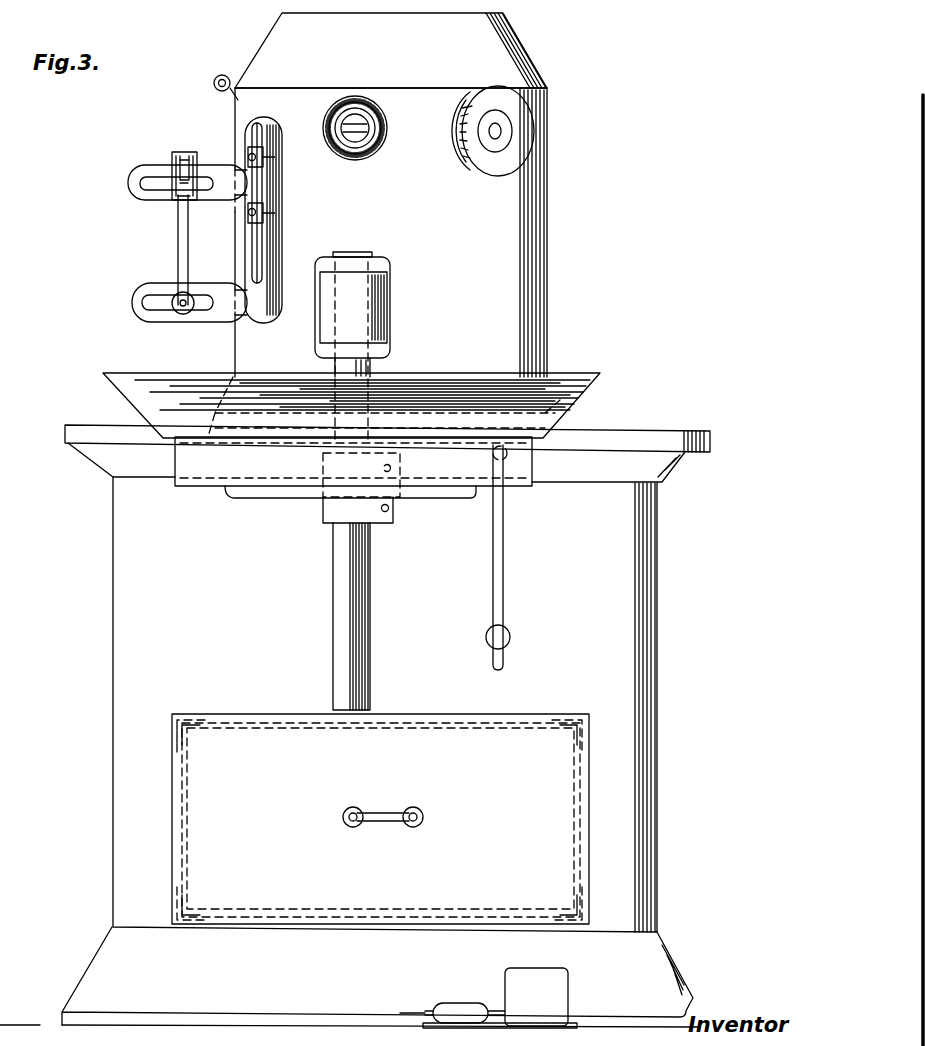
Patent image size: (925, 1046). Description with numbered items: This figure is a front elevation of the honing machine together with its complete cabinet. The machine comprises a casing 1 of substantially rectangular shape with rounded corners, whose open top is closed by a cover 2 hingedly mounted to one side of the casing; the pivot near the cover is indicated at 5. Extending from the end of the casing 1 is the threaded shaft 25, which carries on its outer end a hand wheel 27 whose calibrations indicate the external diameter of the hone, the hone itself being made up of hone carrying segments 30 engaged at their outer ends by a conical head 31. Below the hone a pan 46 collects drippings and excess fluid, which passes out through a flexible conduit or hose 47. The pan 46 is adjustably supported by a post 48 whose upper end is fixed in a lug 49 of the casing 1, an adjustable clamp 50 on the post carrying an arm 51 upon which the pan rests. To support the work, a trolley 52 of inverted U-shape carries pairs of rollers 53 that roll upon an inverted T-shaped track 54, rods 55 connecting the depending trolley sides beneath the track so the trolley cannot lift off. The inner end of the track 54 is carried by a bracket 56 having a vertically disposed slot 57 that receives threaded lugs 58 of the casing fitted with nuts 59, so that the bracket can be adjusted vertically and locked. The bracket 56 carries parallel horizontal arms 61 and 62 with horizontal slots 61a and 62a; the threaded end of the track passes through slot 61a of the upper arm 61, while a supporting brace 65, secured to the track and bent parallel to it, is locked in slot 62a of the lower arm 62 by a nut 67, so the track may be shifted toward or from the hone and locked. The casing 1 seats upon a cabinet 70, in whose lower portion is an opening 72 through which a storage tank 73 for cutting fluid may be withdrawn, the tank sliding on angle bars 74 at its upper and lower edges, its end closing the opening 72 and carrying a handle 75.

The casing 1 is at (527, 251).
The cover 2 is at (391, 50).
The pivot 5 is at (226, 103).
The threaded shaft 25 is at (500, 131).
The hand wheel 27 is at (477, 174).
The hone carrying segments 30 is at (380, 108).
The conical head 31 is at (374, 147).
The pan 46 is at (440, 386).
The flexible conduit or hose 47 is at (512, 556).
The post 48 is at (341, 596).
The lug 49 is at (363, 306).
The adjustable clamp 50 is at (332, 514).
The arm 51 is at (260, 490).
The trolley 52 is at (185, 146).
The rollers 53 is at (180, 163).
The track 54 is at (176, 198).
The rods 55 is at (182, 205).
The bracket 56 is at (253, 295).
The vertically disposed slot 57 is at (273, 242).
The threaded lugs 58 is at (249, 157).
The nuts 59 is at (262, 208).
The upper arm 61 is at (130, 181).
The horizontal slot 61a is at (148, 186).
The lower arm 62 is at (145, 290).
The horizontal slot 62a is at (150, 300).
The supporting brace 65 is at (183, 262).
The nut 67 is at (190, 312).
The cabinet 70 is at (124, 636).
The opening 72 is at (470, 732).
The storage tank 73 is at (432, 736).
The angle bars 74 is at (200, 728).
The handle 75 is at (388, 826).